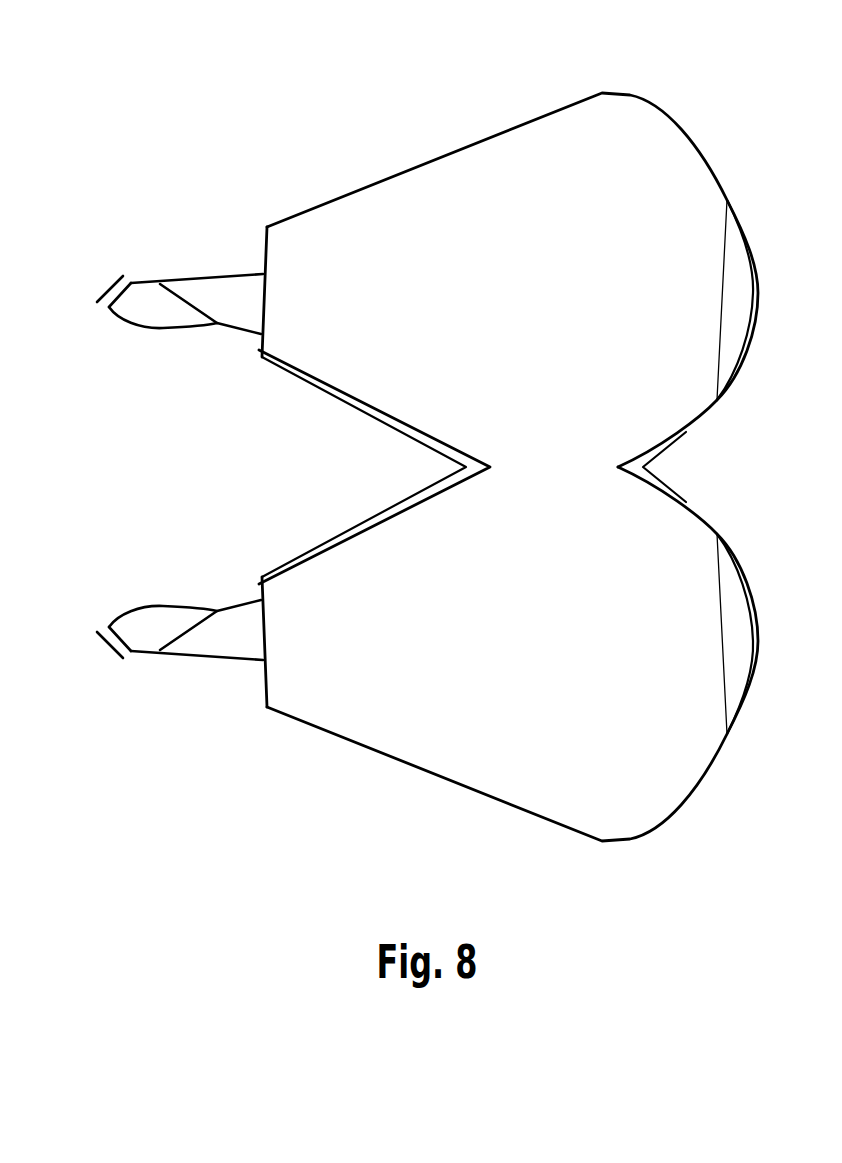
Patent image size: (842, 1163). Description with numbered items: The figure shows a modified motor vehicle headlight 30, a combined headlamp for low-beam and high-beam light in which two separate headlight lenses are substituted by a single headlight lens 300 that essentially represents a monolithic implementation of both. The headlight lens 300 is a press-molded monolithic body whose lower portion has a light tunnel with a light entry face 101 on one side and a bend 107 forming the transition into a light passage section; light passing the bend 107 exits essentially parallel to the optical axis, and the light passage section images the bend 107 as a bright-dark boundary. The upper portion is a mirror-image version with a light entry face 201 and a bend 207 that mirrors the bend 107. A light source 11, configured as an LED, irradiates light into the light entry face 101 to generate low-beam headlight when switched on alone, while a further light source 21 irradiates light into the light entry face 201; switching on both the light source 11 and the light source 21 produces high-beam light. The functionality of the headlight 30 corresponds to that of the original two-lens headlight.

The headlight lens 300 is at (440, 152).
The motor vehicle headlight 30 is at (312, 158).
The further light source 21 is at (110, 288).
The light entry face 201 is at (127, 282).
The bend 207 is at (260, 276).
The light source 11 is at (108, 647).
The light entry face 101 is at (127, 653).
The bend 107 is at (262, 663).